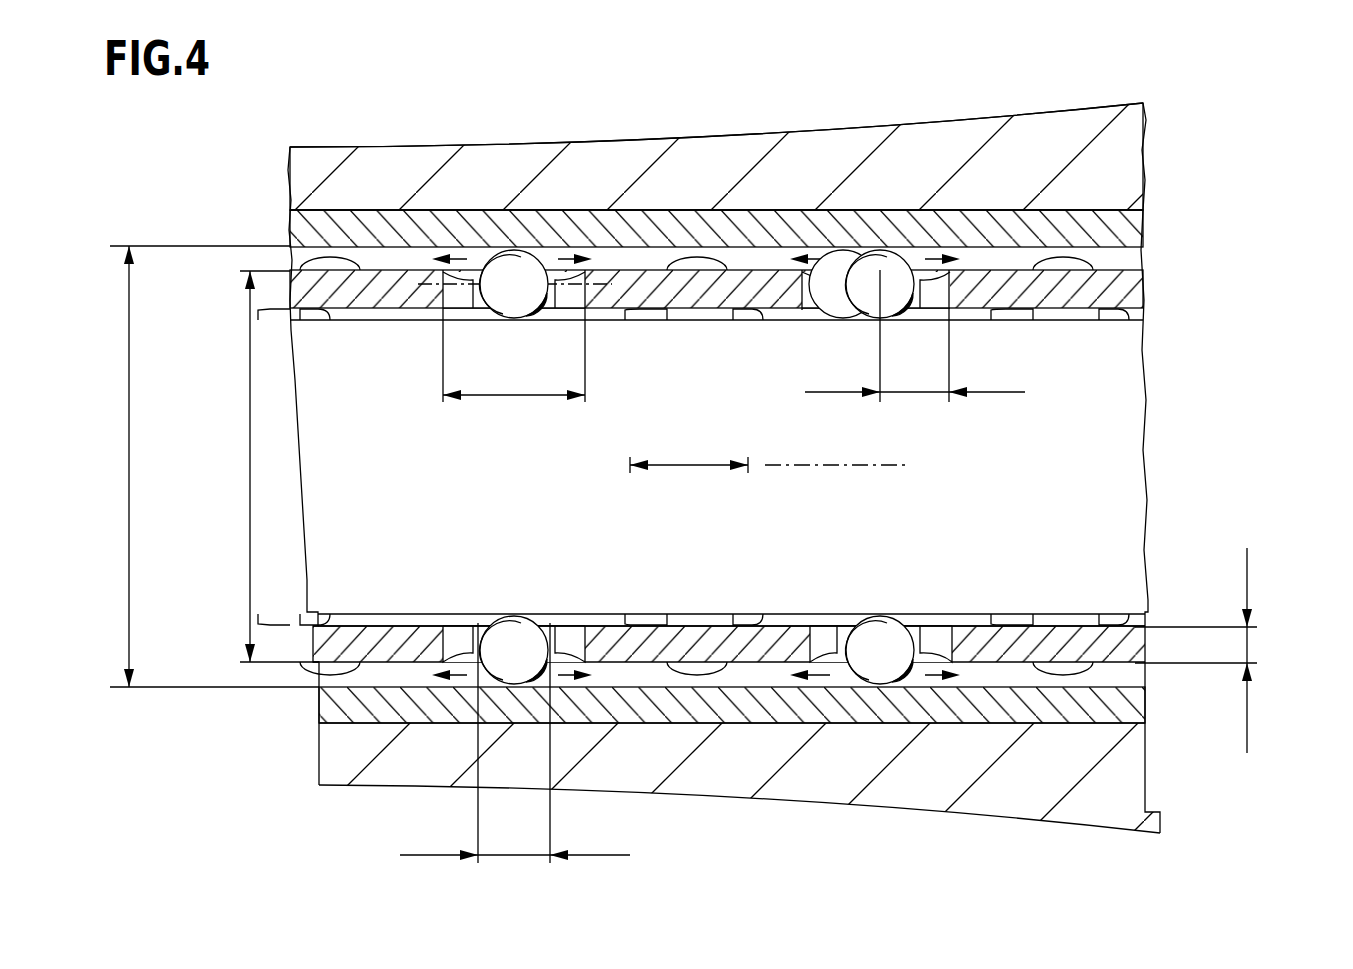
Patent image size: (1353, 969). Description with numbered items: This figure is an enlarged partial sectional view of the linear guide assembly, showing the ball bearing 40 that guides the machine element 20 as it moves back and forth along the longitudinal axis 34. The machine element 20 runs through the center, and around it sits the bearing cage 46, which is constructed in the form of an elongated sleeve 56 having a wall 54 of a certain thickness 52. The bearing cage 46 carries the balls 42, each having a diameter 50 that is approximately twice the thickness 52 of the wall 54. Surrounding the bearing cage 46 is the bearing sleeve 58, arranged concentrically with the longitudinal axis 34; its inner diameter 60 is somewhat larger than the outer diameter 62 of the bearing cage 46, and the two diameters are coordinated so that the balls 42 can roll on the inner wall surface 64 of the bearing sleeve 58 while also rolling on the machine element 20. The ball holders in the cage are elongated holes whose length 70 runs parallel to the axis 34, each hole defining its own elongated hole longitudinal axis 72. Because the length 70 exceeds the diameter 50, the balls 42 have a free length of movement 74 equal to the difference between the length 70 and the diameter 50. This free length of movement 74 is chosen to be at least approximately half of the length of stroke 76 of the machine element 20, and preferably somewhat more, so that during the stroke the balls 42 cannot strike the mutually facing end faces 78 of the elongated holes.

The machine element 20 is at (788, 370).
The longitudinal axis 34 is at (833, 470).
The ball bearing 40 is at (937, 640).
The balls 42 is at (698, 620).
The bearing cage 46 is at (787, 650).
The diameter 50 is at (514, 857).
The thickness 52 is at (1250, 645).
The wall 54 is at (345, 648).
The elongated sleeve 56 is at (373, 262).
The bearing sleeve 58 is at (710, 708).
The inner diameter 60 is at (128, 387).
The outer diameter 62 is at (250, 449).
The inner wall surface 64 is at (375, 675).
The length 70 is at (517, 397).
The elongated hole longitudinal axis 72 is at (512, 285).
The free length of movement 74 is at (915, 395).
The length of stroke 76 is at (688, 465).
The end faces 78 is at (458, 622).